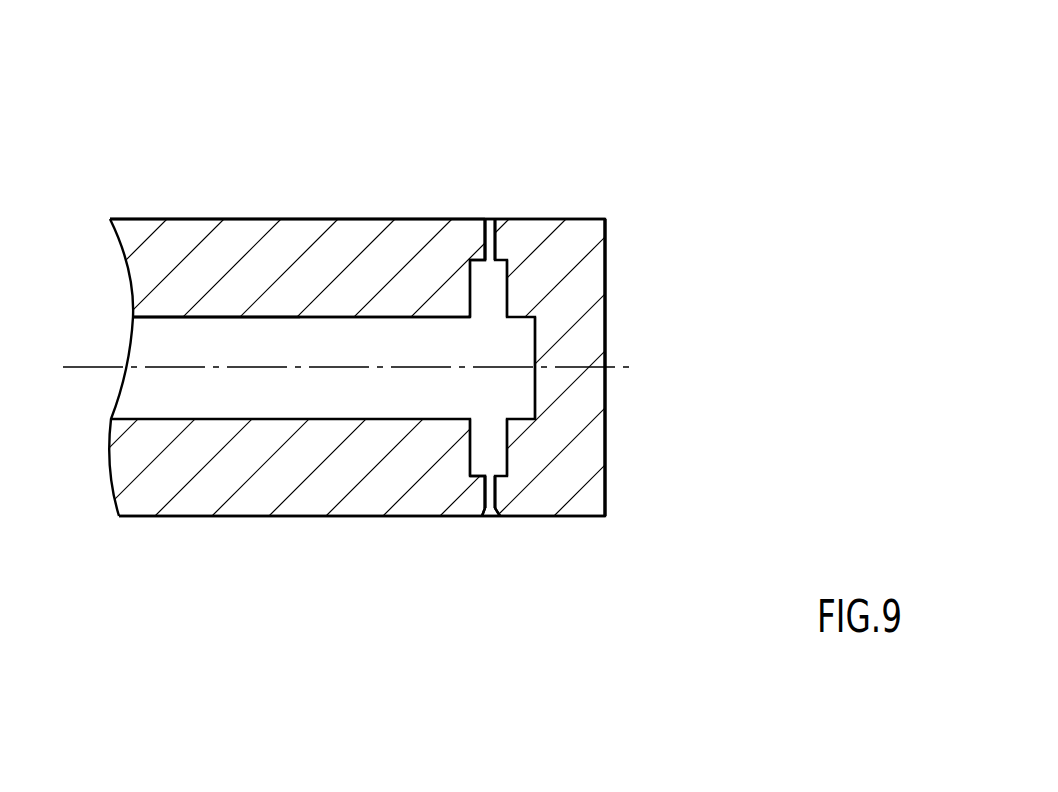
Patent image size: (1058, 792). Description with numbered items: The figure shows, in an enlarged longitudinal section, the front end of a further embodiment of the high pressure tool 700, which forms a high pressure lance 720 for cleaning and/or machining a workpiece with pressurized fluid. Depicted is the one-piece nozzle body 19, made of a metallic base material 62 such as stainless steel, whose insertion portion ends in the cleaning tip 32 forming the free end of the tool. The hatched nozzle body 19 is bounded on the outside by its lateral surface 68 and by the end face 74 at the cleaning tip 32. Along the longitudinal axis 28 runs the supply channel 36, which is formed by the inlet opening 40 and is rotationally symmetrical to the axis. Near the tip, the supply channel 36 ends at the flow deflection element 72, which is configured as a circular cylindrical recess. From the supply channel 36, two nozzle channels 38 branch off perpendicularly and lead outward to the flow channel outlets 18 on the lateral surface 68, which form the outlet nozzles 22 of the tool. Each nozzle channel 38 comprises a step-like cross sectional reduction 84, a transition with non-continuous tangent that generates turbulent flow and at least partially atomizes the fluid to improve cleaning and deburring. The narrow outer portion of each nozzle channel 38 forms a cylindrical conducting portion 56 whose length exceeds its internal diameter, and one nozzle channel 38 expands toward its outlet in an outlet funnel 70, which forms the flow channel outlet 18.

The nozzle body 19 is at (282, 188).
The supply channel 36 is at (176, 315).
The inlet opening 40 is at (160, 317).
The metallic base material 62 is at (340, 219).
The lateral surface 68 is at (240, 517).
The step-like cross sectional reduction 84 is at (462, 238).
The flow channel outlet 18 is at (479, 188).
The outlet nozzle 22 is at (490, 363).
The cylindrical conducting portion 56 is at (516, 243).
The nozzle channel 38 is at (508, 290).
The cleaning tip 32 is at (635, 298).
The end face 74 is at (605, 330).
The flow deflection element 72 is at (578, 403).
The outlet funnel 70 is at (499, 538).
The longitudinal axis 28 is at (83, 367).
The high pressure tool 700 is at (572, 119).
The high pressure lance 720 is at (640, 146).